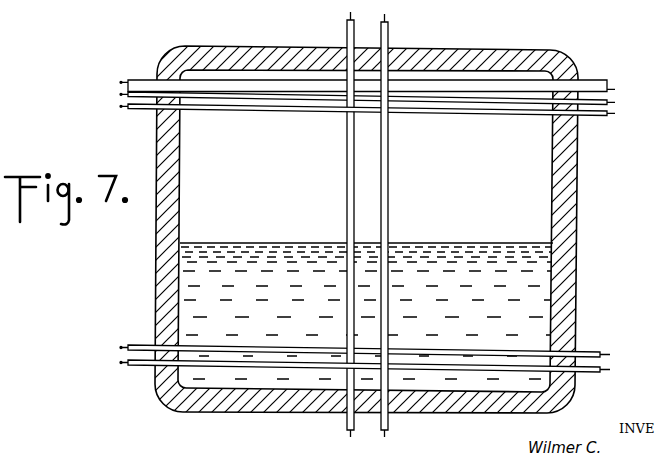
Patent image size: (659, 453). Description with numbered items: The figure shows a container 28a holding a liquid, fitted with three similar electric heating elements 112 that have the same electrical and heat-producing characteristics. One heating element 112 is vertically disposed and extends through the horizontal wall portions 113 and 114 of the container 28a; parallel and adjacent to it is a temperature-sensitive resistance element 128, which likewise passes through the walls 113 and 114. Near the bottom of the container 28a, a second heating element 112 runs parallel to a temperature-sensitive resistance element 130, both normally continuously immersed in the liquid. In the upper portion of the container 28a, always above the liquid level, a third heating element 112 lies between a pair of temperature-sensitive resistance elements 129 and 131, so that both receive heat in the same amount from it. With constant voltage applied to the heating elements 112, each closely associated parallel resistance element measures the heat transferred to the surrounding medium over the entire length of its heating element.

The container 28a is at (571, 247).
The electric heating element 112 is at (443, 100).
The horizontal wall portion 113 is at (238, 404).
The horizontal wall portion 114 is at (271, 47).
The temperature-sensitive resistance element 128 is at (388, 214).
The temperature-sensitive resistance element 129 is at (498, 87).
The temperature-sensitive resistance element 130 is at (418, 368).
The temperature-sensitive resistance element 131 is at (488, 116).